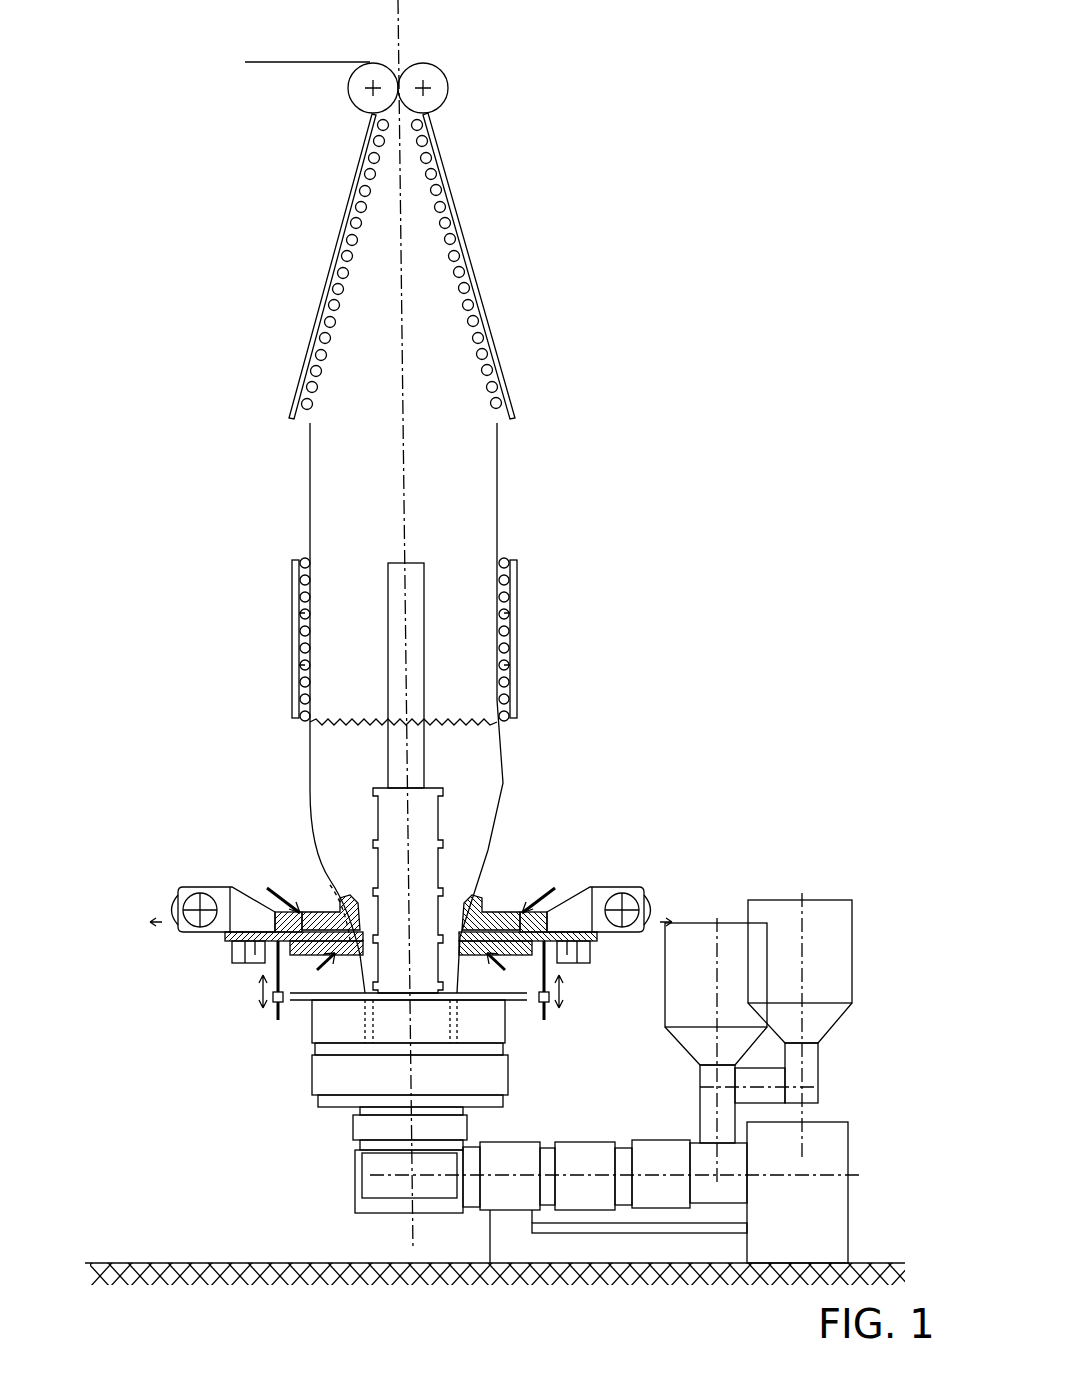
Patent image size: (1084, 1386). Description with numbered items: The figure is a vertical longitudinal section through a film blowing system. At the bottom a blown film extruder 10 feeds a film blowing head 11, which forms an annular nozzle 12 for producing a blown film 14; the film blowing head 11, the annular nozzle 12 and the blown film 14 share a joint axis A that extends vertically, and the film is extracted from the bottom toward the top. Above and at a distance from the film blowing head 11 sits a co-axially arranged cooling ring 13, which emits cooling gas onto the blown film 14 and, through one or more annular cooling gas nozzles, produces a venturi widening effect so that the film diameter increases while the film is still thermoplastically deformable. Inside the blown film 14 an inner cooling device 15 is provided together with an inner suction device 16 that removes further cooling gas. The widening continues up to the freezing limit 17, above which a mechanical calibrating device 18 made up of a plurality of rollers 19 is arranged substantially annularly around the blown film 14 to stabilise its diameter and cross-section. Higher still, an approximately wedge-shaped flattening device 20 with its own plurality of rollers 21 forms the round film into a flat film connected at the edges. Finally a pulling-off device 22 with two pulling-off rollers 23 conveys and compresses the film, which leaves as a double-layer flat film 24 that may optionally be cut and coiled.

The blown film extruder 10 is at (582, 1108).
The film blowing head 11 is at (480, 1080).
The annular nozzle 12 is at (542, 1000).
The cooling ring 13 is at (592, 851).
The blown film 14 is at (503, 783).
The inner cooling device 15 is at (435, 870).
The inner suction device 16 is at (413, 563).
The freezing limit 17 is at (470, 720).
The calibrating device 18 is at (453, 639).
The rollers 19 is at (506, 600).
The flattening device 20 is at (433, 266).
The rollers 21 is at (440, 205).
The pulling-off device 22 is at (465, 67).
The pulling-off rollers 23 is at (433, 75).
The double-layer flat film 24 is at (273, 60).
The joint axis A is at (415, 1247).